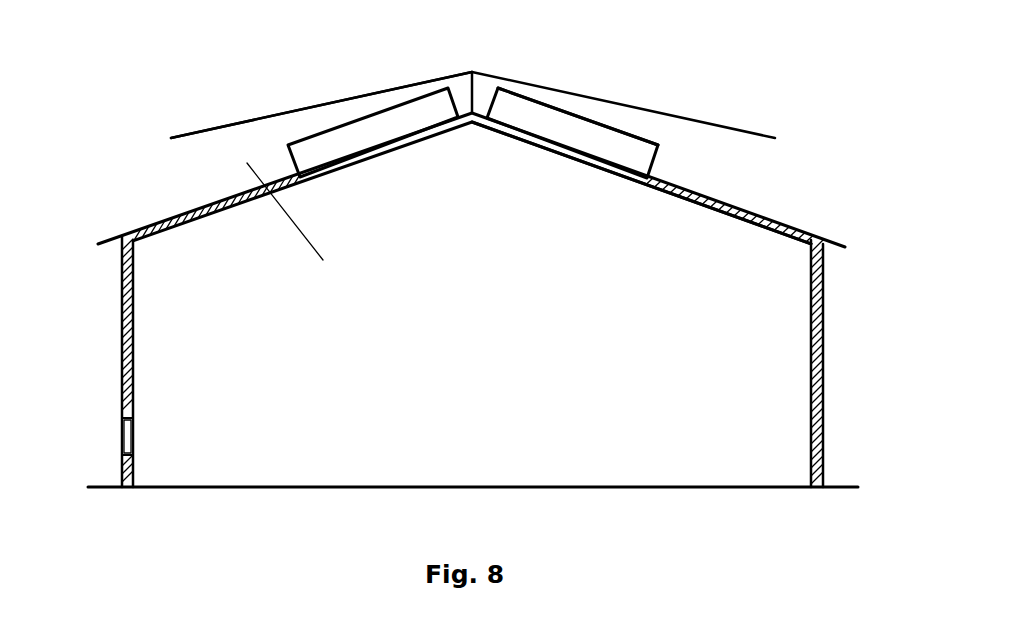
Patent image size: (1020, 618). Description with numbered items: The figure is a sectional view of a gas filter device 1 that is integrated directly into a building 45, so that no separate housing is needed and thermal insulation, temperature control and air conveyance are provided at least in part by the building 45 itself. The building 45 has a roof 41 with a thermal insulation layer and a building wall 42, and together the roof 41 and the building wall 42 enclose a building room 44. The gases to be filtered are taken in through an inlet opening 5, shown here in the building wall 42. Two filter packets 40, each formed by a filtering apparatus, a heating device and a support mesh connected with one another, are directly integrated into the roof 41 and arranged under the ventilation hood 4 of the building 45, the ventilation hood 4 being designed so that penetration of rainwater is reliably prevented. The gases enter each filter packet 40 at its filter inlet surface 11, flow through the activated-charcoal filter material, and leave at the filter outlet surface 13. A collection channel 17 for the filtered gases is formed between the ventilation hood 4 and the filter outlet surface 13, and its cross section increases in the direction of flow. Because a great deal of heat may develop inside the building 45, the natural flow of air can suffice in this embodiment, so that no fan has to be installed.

The gas filter device 1 is at (408, 155).
The ventilation hood 4 is at (520, 80).
The inlet opening 5 is at (128, 437).
The filter inlet surface 11 is at (592, 165).
The filter outlet surface 13 is at (562, 107).
The collection channel 17 is at (347, 117).
The filter packet 40 is at (407, 122).
The roof 41 is at (178, 222).
The building wall 42 is at (128, 338).
The building room 44 is at (267, 201).
The building 45 is at (775, 217).